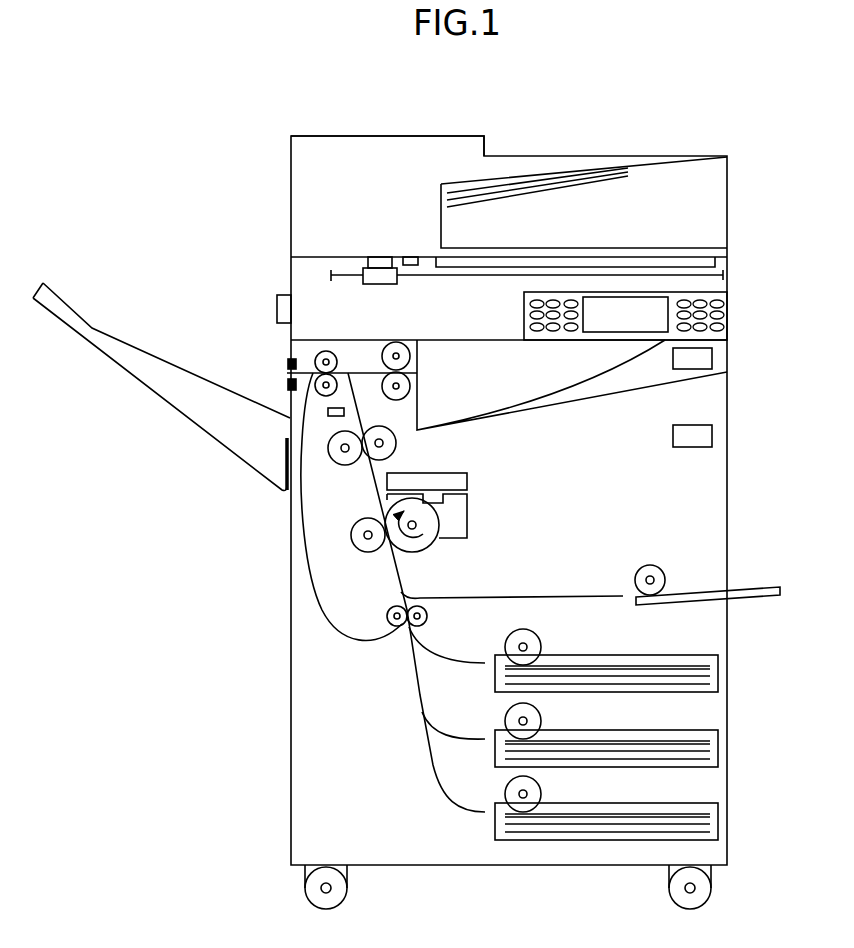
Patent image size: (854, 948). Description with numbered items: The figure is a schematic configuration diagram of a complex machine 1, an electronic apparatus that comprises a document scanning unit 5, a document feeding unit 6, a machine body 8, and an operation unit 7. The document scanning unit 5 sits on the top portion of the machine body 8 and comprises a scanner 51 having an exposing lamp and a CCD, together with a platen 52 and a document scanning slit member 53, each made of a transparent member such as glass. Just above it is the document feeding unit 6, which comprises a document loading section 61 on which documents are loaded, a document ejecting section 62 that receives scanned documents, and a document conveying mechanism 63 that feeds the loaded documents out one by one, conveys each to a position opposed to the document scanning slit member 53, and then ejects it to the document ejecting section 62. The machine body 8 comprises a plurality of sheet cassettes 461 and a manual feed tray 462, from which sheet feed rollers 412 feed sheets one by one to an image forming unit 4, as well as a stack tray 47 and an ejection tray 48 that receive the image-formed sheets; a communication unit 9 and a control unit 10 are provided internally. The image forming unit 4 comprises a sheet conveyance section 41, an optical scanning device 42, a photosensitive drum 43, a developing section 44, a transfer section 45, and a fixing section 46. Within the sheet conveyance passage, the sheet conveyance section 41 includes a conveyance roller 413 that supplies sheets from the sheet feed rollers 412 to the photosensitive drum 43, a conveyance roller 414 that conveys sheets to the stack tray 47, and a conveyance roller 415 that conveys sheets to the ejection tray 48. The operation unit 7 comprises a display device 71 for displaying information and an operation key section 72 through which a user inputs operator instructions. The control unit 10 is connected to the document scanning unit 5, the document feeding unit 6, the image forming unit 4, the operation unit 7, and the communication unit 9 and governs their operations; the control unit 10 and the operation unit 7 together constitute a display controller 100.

The complex machine 1 is at (113, 134).
The image forming unit 4 is at (340, 518).
The document scanning unit 5 is at (488, 278).
The document feeding unit 6 is at (584, 154).
The operation unit 7 is at (616, 342).
The machine body 8 is at (705, 511).
The communication unit 9 is at (712, 432).
The control unit 10 is at (732, 355).
The sheet conveyance section 41 is at (395, 727).
The optical scanning device 42 is at (467, 482).
The photosensitive drum 43 is at (425, 546).
The developing section 44 is at (458, 515).
The transfer section 45 is at (357, 551).
The fixing section 46 is at (352, 476).
The stack tray 47 is at (177, 412).
The ejection tray 48 is at (567, 403).
The scanner 51 is at (380, 285).
The platen 52 is at (715, 262).
The document scanning slit member 53 is at (370, 257).
The document loading section 61 is at (648, 160).
The document ejecting section 62 is at (665, 247).
The document conveying mechanism 63 is at (368, 210).
The display device 71 is at (617, 312).
The operation key section 72 is at (680, 337).
The display controller 100 is at (650, 342).
The sheet feed rollers 412 is at (655, 567).
The conveyance roller 413 is at (392, 626).
The conveyance roller 414 is at (316, 355).
The conveyance roller 415 is at (410, 357).
The sheet cassettes 461 is at (712, 680).
The manual feed tray 462 is at (645, 674).